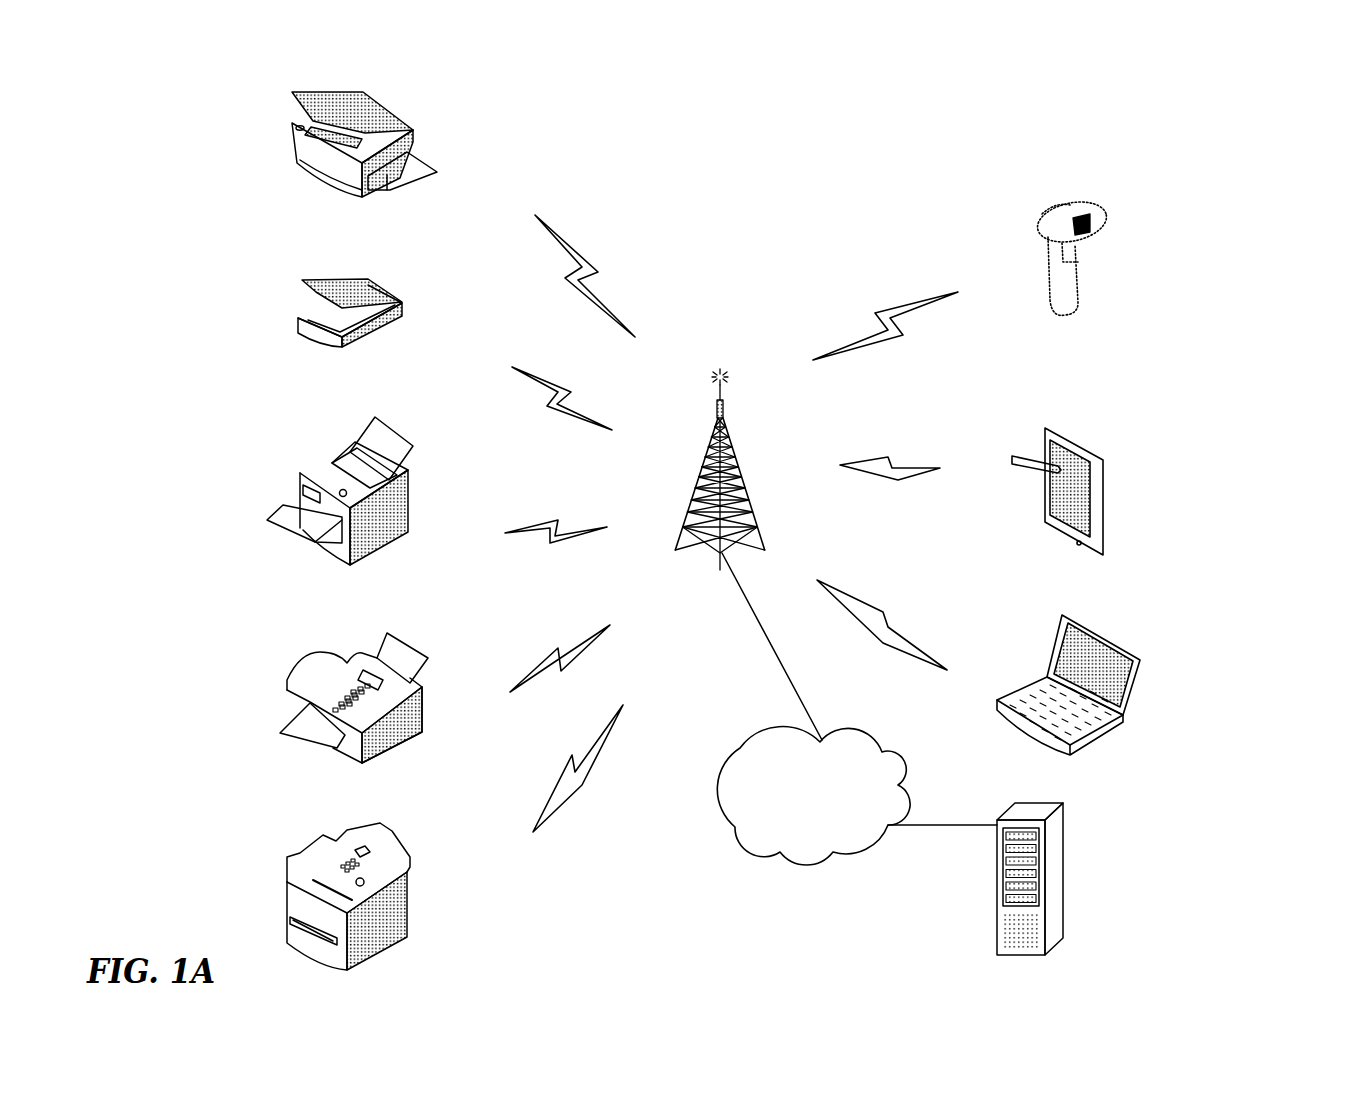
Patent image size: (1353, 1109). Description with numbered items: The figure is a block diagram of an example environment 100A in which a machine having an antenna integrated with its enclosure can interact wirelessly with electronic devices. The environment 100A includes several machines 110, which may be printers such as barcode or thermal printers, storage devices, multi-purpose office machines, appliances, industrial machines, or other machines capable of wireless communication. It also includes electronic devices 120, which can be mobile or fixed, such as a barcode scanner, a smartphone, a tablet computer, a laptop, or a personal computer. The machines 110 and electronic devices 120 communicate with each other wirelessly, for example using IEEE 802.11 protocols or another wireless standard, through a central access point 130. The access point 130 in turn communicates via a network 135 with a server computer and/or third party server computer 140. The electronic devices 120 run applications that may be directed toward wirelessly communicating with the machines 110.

The environment 100A is at (1195, 160).
The machine 110 is at (398, 112).
The electronic device 120 is at (1036, 212).
The access point 130 is at (730, 433).
The network 135 is at (897, 786).
The server computer 140 is at (1065, 840).